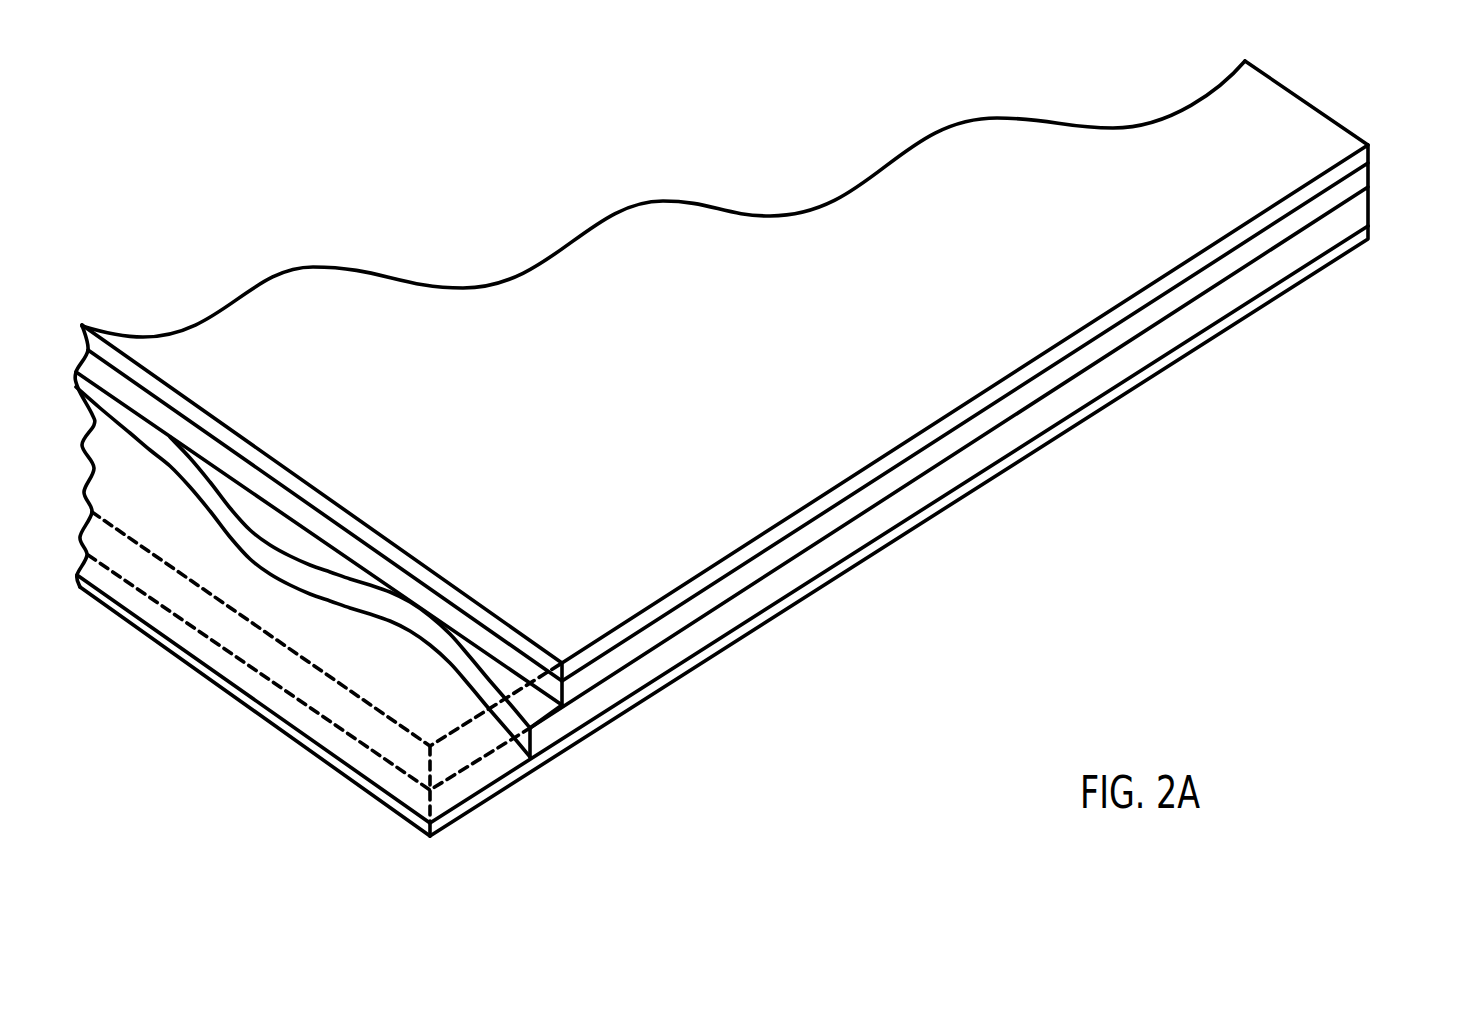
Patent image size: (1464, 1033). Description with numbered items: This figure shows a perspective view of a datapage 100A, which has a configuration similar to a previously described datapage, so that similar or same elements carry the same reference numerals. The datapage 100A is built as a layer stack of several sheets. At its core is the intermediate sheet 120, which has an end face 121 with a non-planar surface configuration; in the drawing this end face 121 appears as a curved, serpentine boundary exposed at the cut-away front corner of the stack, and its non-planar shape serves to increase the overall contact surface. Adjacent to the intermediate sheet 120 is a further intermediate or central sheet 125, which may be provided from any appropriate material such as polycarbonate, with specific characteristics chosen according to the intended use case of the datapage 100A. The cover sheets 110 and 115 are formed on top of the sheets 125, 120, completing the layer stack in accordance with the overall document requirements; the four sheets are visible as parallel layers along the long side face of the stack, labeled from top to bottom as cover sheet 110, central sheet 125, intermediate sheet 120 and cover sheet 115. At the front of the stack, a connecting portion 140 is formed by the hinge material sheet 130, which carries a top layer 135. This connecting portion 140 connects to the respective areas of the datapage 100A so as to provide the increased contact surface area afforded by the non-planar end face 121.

The datapage 100A is at (747, 108).
The cover sheet 110 is at (1358, 161).
The further intermediate or central sheet 125 is at (1358, 185).
The intermediate sheet 120 is at (1358, 212).
The cover sheet 115 is at (1358, 233).
The end face 121 is at (250, 510).
The top layer 135 is at (400, 760).
The hinge material sheet 130 is at (460, 795).
The connecting portion 140 is at (498, 772).